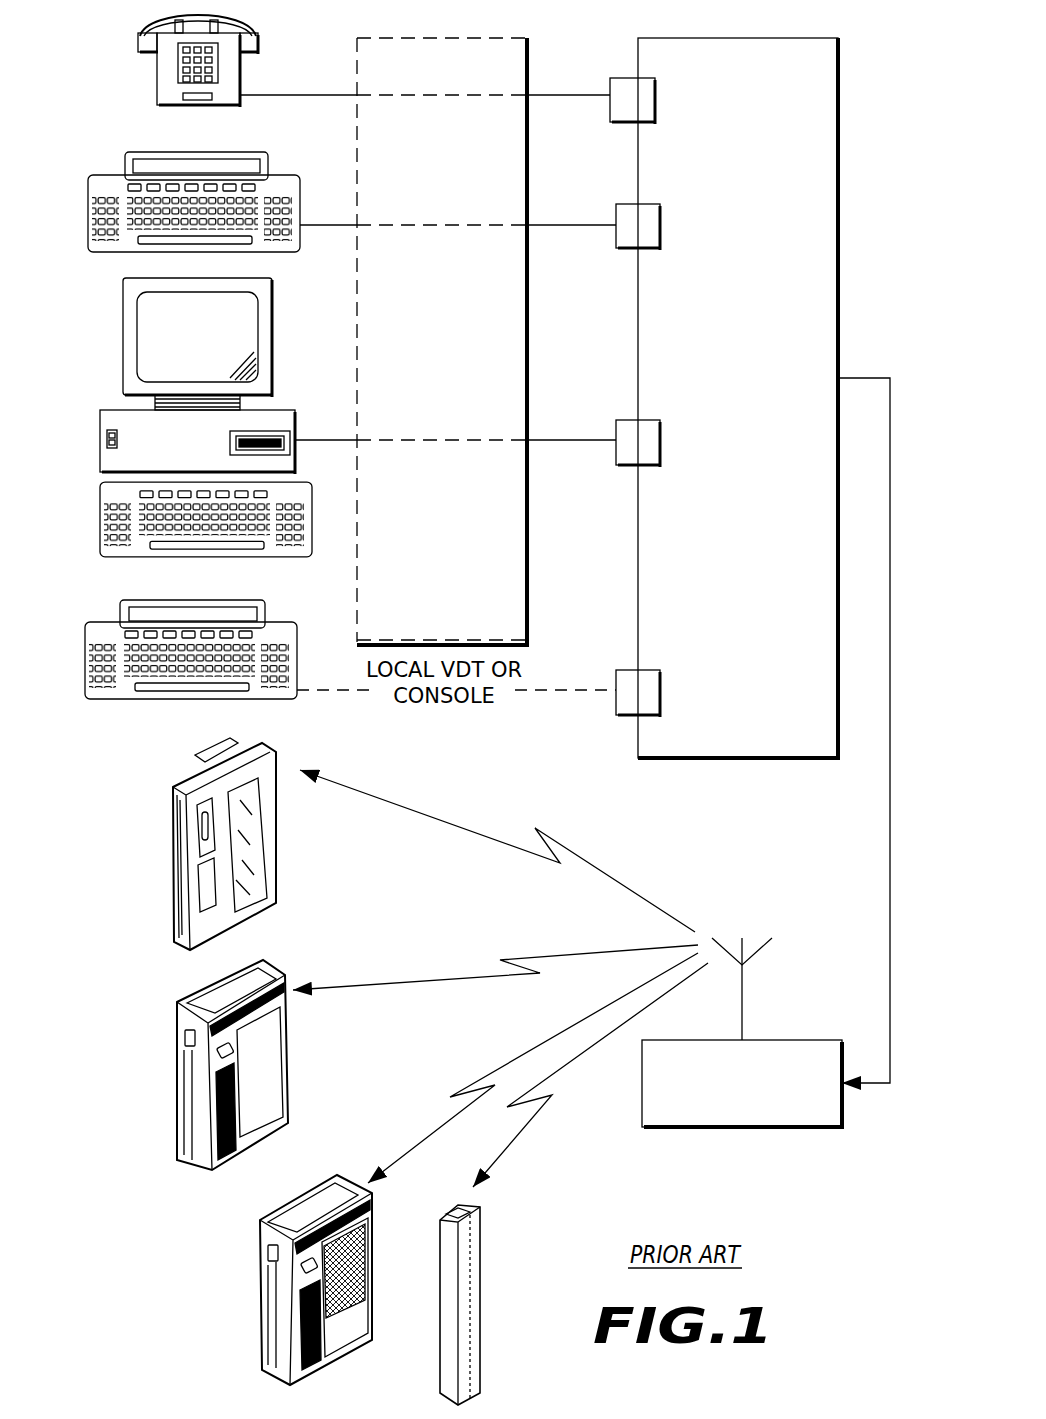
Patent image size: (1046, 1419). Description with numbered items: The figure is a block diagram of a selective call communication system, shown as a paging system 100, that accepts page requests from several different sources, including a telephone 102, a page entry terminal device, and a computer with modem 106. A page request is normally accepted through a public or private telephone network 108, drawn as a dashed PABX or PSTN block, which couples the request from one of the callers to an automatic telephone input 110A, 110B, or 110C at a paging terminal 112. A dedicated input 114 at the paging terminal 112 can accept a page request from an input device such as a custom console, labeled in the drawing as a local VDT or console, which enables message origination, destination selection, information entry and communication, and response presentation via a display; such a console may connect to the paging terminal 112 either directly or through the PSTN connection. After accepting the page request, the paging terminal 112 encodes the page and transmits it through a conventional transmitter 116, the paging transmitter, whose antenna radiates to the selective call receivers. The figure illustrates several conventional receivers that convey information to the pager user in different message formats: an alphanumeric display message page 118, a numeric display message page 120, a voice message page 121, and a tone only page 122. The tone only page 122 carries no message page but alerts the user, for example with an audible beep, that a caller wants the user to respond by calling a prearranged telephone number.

The paging system 100 is at (742, 13).
The telephone 102 is at (158, 78).
The computer with modem 106 is at (100, 410).
The public or private telephone network 108 is at (527, 38).
The automatic telephone input 110A is at (610, 112).
The automatic telephone input 110B is at (616, 240).
The automatic telephone input 110C is at (616, 460).
The paging terminal 112 is at (838, 38).
The dedicated input 114 is at (616, 707).
The transmitter 116 is at (780, 1040).
The alphanumeric display message page 118 is at (275, 752).
The numeric display message page 120 is at (250, 957).
The voice message page 121 is at (337, 1175).
The tone only page 122 is at (480, 1210).